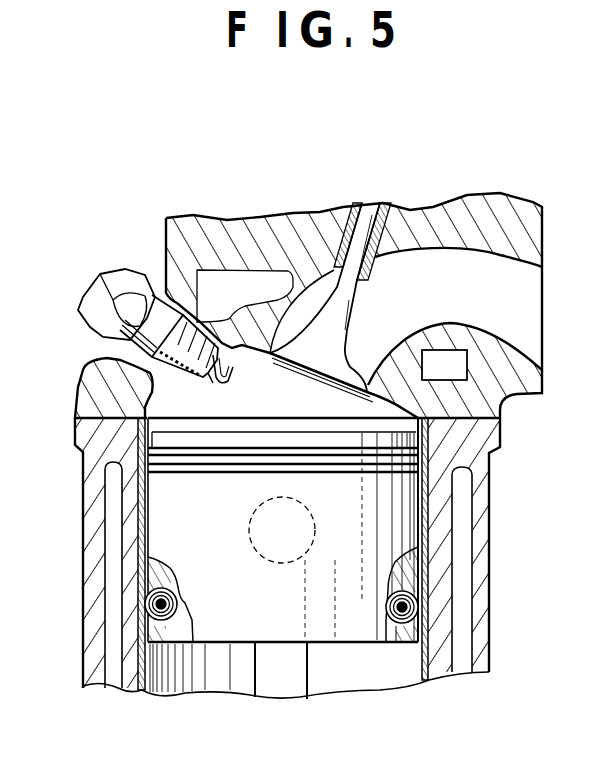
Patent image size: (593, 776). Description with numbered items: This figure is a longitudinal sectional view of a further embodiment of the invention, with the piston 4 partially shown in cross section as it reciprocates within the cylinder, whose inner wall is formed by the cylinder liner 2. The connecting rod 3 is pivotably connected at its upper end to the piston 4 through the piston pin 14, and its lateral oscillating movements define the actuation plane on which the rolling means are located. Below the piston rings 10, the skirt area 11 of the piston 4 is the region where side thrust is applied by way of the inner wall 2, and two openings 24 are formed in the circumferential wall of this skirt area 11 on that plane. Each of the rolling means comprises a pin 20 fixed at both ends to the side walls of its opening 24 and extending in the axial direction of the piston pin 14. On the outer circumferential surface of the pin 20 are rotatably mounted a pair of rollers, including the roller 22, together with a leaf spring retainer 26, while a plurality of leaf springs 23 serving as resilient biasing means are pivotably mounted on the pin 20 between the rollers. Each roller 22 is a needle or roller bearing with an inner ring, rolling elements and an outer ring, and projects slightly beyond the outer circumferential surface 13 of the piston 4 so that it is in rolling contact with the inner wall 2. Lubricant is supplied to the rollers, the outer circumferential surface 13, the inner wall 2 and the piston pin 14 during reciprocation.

The cylinder liner 2 is at (140, 688).
The connecting rod 3 is at (297, 673).
The piston 4 is at (167, 511).
The piston rings 10 is at (288, 450).
The skirt area 11 is at (228, 630).
The outer circumferential surface 13 is at (143, 570).
The piston pin 14 is at (252, 523).
The pin 20 is at (145, 598).
The roller 22 is at (145, 637).
The leaf springs 23 is at (147, 632).
The openings 24 is at (145, 660).
The leaf spring retainer 26 is at (143, 583).